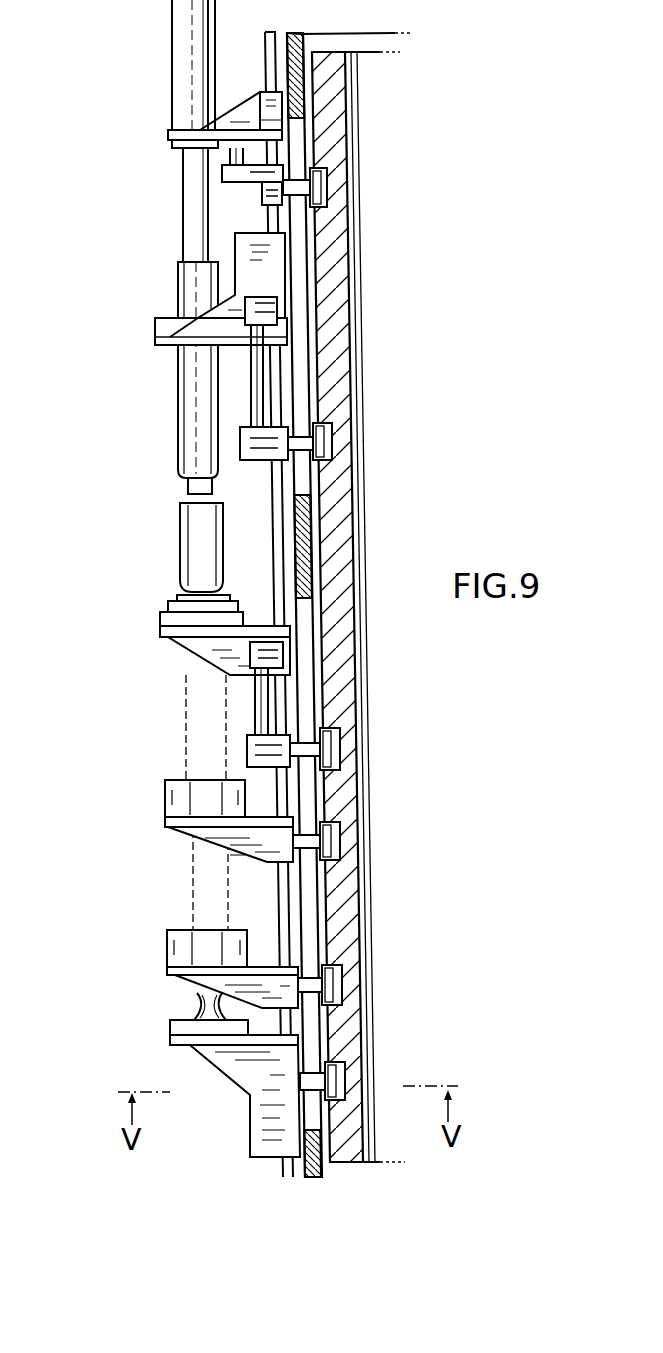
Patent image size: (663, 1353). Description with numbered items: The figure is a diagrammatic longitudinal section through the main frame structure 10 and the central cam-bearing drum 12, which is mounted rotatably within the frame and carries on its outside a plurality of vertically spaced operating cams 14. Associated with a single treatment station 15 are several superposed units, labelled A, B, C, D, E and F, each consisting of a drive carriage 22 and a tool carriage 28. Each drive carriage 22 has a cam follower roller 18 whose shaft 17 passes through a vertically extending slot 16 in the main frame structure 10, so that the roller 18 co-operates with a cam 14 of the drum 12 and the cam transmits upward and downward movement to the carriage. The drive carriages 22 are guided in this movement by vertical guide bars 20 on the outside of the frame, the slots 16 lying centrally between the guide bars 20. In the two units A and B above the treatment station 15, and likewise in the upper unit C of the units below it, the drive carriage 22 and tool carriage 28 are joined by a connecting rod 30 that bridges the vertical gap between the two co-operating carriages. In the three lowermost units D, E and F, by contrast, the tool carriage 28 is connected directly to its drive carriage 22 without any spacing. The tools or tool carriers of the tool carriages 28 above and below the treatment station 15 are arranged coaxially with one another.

The main frame structure 10 is at (297, 33).
The cam-bearing drum 12 is at (338, 100).
The operating cams 14 is at (328, 188).
The treatment station 15 is at (172, 532).
The slots 16 is at (297, 322).
The shaft 17 is at (297, 192).
The cam follower roller 18 is at (326, 441).
The guide bars 20 is at (283, 897).
The drive carriage 22 is at (267, 190).
The tool carriage 28 is at (267, 110).
The connecting rod 30 is at (232, 153).
The unit A is at (278, 173).
The unit B is at (277, 427).
The unit C is at (295, 727).
The unit D is at (293, 872).
The unit E is at (325, 1006).
The unit F is at (273, 1065).